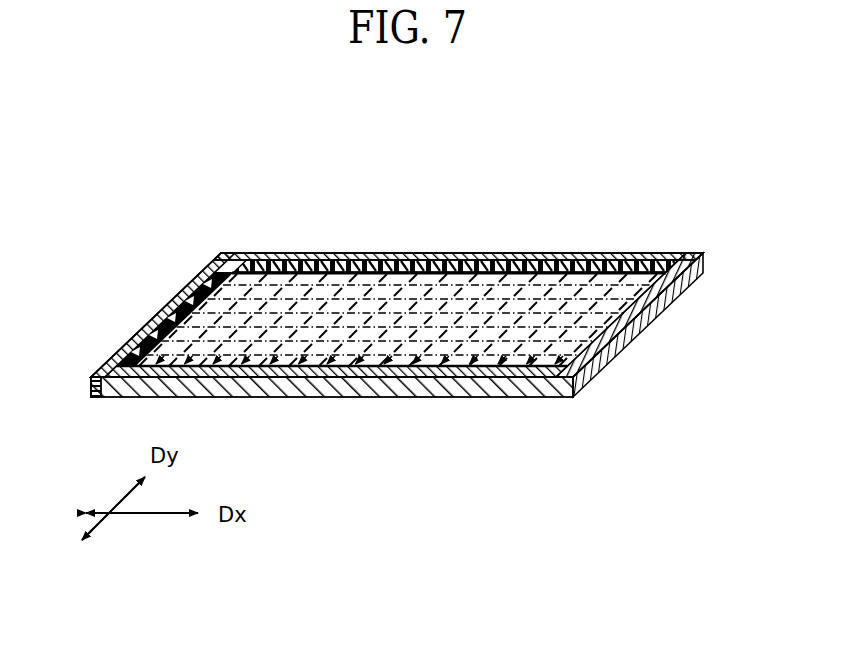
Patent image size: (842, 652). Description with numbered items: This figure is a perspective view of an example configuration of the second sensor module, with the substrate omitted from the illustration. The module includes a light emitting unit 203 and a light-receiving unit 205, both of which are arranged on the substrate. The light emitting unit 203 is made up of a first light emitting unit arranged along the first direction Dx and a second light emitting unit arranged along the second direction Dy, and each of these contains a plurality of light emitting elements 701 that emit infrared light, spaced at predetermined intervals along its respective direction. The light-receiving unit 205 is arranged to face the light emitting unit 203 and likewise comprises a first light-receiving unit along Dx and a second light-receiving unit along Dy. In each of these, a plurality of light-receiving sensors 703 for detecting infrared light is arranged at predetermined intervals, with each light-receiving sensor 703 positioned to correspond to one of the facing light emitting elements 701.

The light emitting unit 203 is at (392, 250).
The light-receiving unit 205 is at (163, 313).
The light emitting elements 701 is at (278, 252).
The light-receiving sensors 703 is at (127, 343).